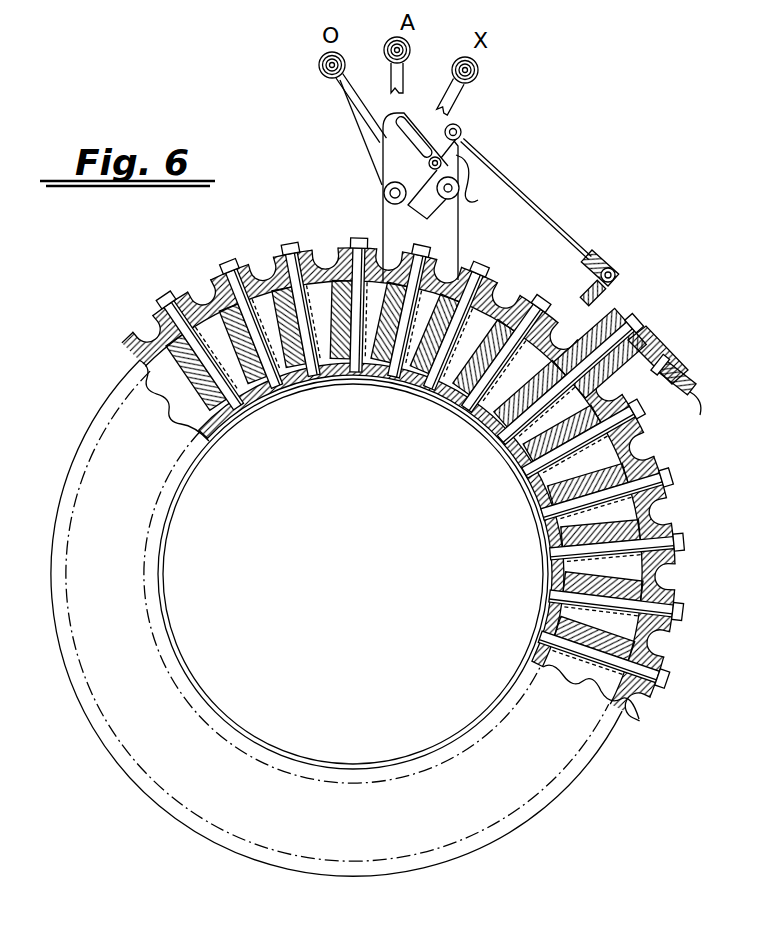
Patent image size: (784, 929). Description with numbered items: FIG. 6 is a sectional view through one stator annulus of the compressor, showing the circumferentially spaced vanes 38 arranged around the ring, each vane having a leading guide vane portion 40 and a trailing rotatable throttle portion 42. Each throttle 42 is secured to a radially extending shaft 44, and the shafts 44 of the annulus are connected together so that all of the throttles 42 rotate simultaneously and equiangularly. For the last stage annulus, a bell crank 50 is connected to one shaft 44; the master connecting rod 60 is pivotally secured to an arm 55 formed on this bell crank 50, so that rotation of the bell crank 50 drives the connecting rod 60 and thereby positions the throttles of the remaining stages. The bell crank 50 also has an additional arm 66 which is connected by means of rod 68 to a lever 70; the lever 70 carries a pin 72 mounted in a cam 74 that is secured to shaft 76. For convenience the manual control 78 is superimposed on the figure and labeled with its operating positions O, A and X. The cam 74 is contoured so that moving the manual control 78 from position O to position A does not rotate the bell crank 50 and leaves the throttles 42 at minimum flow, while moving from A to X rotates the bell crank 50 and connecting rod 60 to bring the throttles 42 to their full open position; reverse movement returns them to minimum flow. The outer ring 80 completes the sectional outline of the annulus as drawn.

The vane 38 is at (168, 367).
The leading guide vane portion 40 is at (326, 372).
The trailing rotatable throttle portion 42 is at (246, 378).
The radially extending shaft 44 is at (219, 260).
The bell crank 50 is at (647, 329).
The arm 55 is at (648, 357).
The master connecting rod 60 is at (694, 390).
The additional arm 66 is at (615, 298).
The rod 68 is at (548, 217).
The lever 70 is at (478, 200).
The pin 72 is at (461, 135).
The cam 74 is at (397, 150).
The shaft 76 is at (386, 195).
The manual control 78 is at (352, 105).
The cover ring 80 is at (500, 800).